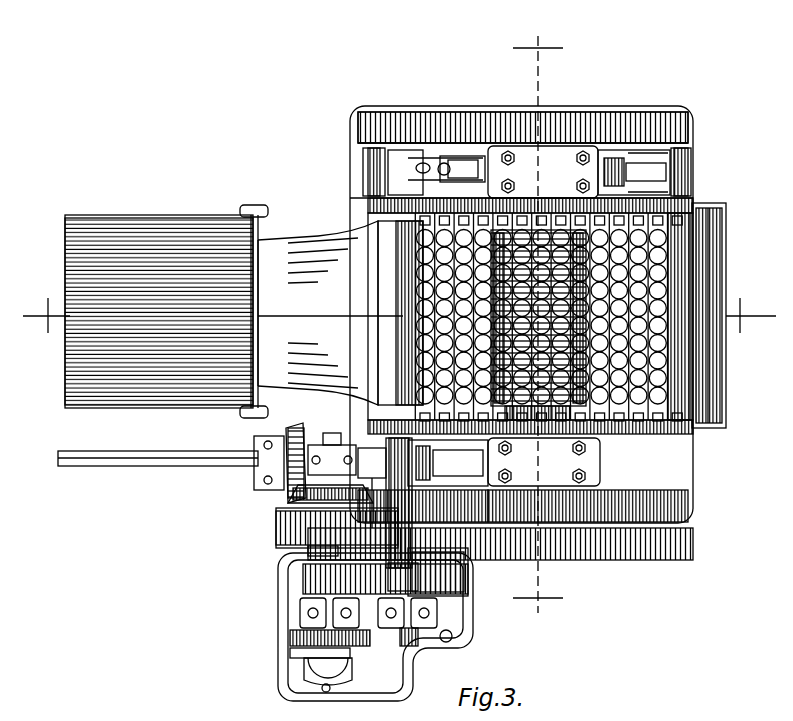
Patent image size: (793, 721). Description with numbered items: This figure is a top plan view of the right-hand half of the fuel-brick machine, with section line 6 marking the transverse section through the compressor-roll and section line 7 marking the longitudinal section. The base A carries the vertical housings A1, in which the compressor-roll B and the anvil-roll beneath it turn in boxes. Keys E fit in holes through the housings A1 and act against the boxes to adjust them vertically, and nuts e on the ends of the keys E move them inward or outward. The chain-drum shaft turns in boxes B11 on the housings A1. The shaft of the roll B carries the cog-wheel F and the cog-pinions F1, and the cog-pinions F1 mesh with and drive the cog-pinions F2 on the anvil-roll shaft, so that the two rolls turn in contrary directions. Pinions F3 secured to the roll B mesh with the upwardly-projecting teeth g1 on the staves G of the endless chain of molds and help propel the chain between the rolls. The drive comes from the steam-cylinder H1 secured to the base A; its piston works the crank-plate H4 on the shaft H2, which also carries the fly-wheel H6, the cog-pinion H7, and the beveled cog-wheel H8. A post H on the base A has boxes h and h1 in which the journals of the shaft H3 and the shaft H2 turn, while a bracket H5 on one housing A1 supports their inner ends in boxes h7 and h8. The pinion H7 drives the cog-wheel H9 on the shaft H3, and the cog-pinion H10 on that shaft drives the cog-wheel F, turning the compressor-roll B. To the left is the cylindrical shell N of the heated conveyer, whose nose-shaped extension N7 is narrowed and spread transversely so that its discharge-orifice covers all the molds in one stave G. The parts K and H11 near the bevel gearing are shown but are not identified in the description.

The section line 6 is at (538, 323).
The section line 7 is at (402, 313).
The base A is at (620, 108).
The cog-pinions F1 is at (535, 110).
The boxes B11 is at (360, 155).
The nuts e is at (435, 172).
The compressor-roll B is at (520, 195).
The vertical housings A1 is at (543, 172).
The keys E is at (652, 162).
The staves G is at (672, 215).
The upwardly-projecting tooth g1 is at (722, 205).
The cylindrical shell N is at (166, 311).
The nose-shaped extension N7 is at (340, 313).
The box h7 is at (470, 465).
The pinions F3 is at (425, 495).
The cog-pinions F2 is at (575, 505).
The cog-wheel F is at (660, 545).
The beveled cog-wheel H8 is at (250, 468).
The shaft bracket H11 is at (250, 430).
The bevel pinion K is at (280, 485).
The box h8 is at (312, 440).
The bracket H5 is at (372, 488).
The shaft H3 is at (421, 503).
The fly-wheel H6 is at (270, 512).
The shaft H2 is at (300, 540).
The cog-pinion H10 is at (420, 550).
The cog-wheel H9 is at (460, 578).
The cog-pinion H7 is at (298, 572).
The box h1 is at (292, 604).
The post H is at (430, 602).
The box h is at (415, 612).
The crank-plate H4 is at (282, 635).
The steam-cylinder H1 is at (298, 660).